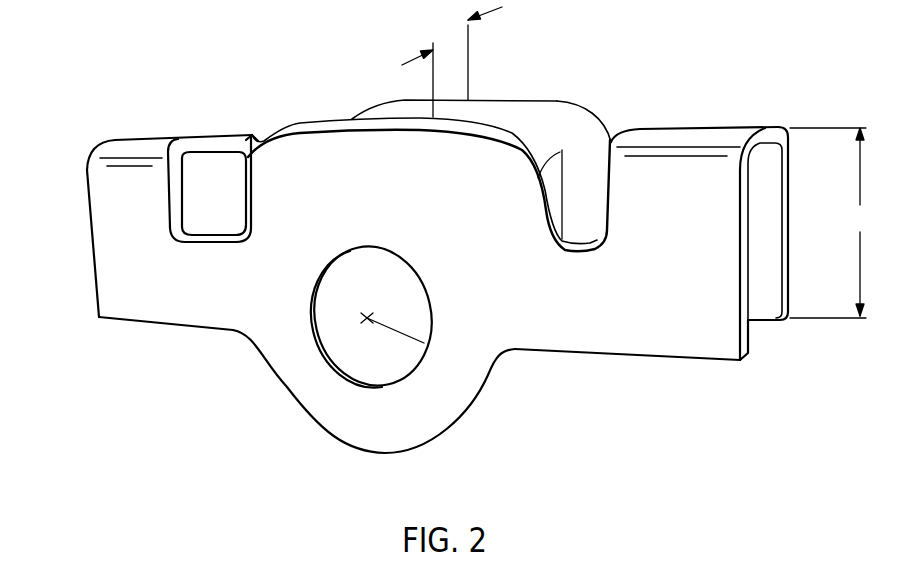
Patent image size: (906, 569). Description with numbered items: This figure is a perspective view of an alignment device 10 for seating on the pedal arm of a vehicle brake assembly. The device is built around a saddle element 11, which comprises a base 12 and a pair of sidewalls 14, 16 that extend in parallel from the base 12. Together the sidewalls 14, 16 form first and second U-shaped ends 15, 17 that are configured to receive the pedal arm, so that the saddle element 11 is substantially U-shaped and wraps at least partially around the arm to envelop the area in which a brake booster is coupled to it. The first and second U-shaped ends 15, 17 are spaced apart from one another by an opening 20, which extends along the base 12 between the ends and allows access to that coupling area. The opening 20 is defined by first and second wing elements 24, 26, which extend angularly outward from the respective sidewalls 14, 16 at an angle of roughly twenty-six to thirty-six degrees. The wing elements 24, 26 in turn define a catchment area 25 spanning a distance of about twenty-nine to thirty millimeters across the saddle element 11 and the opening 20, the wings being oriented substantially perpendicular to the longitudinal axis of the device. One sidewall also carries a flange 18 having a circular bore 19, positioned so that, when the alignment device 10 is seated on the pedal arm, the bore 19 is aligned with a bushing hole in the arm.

The alignment device 10 is at (726, 66).
The saddle element 11 is at (693, 305).
The base 12 is at (188, 147).
The sidewall 14 is at (102, 236).
The first U-shaped end 15 is at (122, 139).
The sidewall 16 is at (770, 250).
The second U-shaped end 17 is at (703, 127).
The flange 18 is at (470, 368).
The circular bore 19 is at (348, 312).
The opening 20 is at (237, 136).
The first wing element 24 is at (328, 127).
The catchment area 25 is at (403, 110).
The second wing element 26 is at (535, 107).